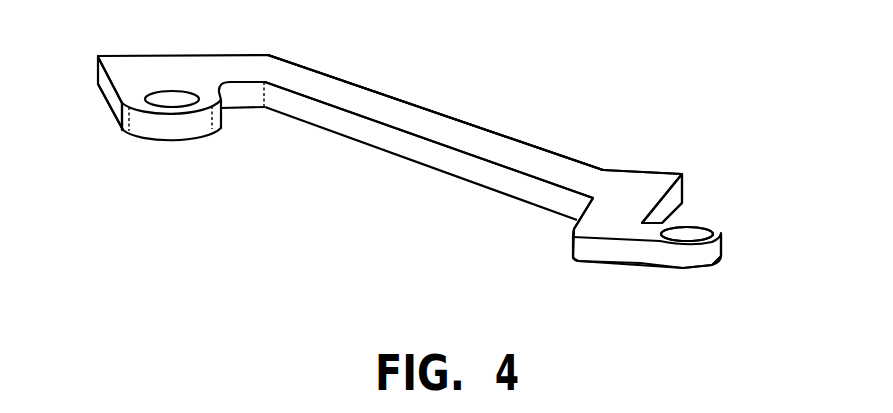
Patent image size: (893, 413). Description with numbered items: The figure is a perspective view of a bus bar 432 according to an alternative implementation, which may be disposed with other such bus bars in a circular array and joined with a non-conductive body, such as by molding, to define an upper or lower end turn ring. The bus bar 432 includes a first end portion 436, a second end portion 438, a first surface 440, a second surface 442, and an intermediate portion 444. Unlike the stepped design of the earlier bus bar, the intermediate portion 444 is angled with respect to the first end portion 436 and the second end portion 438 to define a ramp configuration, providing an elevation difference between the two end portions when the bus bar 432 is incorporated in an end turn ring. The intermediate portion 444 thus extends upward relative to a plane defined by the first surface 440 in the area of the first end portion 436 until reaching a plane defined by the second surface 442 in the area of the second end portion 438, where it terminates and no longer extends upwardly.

The bus bar 432 is at (142, 44).
The first end portion 436 is at (742, 252).
The second end portion 438 is at (98, 106).
The first surface 440 is at (413, 161).
The second surface 442 is at (347, 97).
The intermediate portion 444 is at (452, 110).